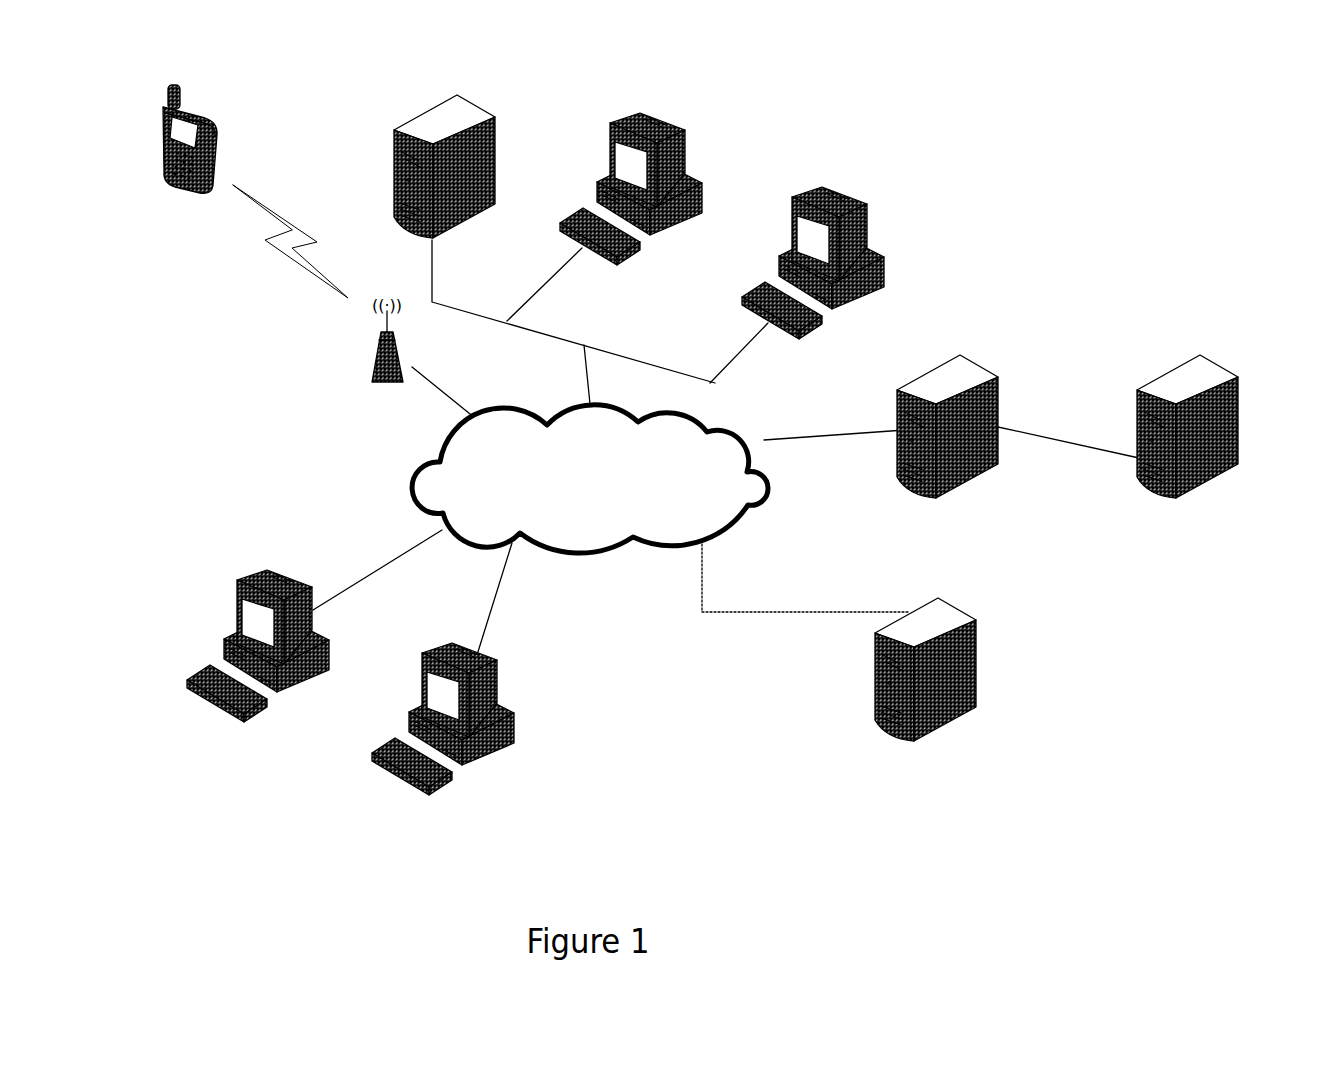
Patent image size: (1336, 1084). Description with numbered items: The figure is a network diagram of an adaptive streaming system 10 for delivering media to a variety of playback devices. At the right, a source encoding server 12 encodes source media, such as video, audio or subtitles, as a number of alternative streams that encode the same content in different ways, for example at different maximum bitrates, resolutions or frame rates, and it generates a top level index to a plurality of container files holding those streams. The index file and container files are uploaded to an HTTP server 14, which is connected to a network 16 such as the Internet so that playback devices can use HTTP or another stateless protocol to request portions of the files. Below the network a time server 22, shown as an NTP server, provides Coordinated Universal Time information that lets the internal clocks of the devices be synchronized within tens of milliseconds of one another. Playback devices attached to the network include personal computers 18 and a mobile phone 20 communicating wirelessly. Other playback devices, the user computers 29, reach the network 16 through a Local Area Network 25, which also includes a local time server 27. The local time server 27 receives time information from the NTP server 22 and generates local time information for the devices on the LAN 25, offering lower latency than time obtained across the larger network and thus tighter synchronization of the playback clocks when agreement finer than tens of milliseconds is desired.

The adaptive streaming system 10 is at (1045, 168).
The source encoding server 12 is at (1207, 355).
The HTTP server 14 is at (965, 373).
The network 16 is at (632, 545).
The personal computers 18 is at (215, 708).
The mobile phones 20 is at (214, 113).
The time server 22 is at (978, 707).
The Local Area Network 25 is at (535, 333).
The local time server 27 is at (493, 117).
The user computers 29 is at (660, 125).